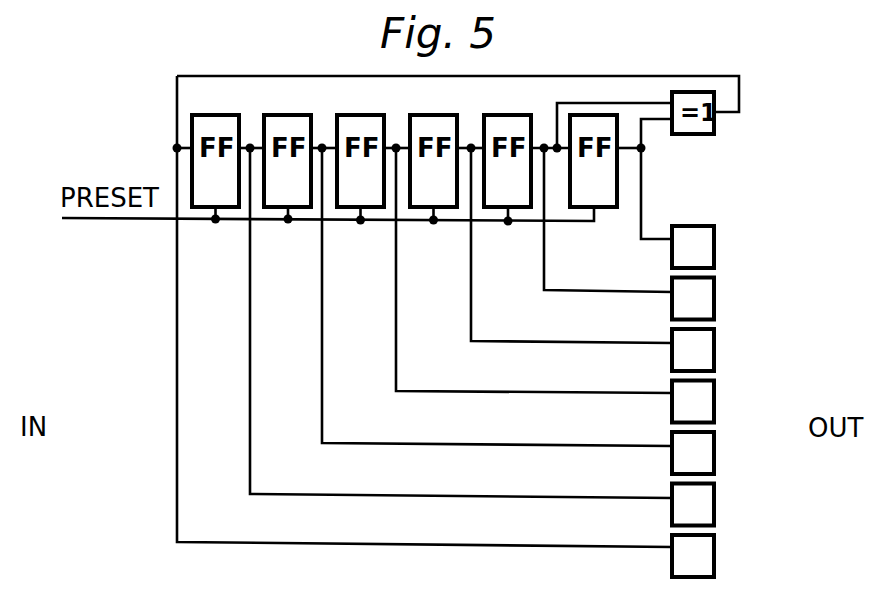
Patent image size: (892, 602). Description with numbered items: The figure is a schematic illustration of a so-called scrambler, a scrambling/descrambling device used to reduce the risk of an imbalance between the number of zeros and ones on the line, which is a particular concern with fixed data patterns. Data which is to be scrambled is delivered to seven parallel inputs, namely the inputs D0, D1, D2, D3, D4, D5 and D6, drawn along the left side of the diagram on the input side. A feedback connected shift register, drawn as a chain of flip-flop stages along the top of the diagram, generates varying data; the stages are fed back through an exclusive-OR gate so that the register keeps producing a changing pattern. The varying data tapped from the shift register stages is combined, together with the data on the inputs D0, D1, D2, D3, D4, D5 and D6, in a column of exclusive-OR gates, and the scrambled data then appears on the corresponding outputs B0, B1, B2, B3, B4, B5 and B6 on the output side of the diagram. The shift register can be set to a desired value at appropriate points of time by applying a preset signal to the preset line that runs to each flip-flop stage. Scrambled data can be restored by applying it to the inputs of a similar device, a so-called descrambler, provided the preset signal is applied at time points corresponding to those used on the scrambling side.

The input D0 is at (672, 252).
The input D1 is at (672, 304).
The input D2 is at (672, 356).
The input D3 is at (672, 407).
The input D4 is at (672, 459).
The input D5 is at (672, 510).
The input D6 is at (672, 560).
The output B0 is at (714, 247).
The output B1 is at (714, 298).
The output B2 is at (714, 350).
The output B3 is at (714, 402).
The output B4 is at (714, 453).
The output B5 is at (714, 504).
The output B6 is at (714, 556).